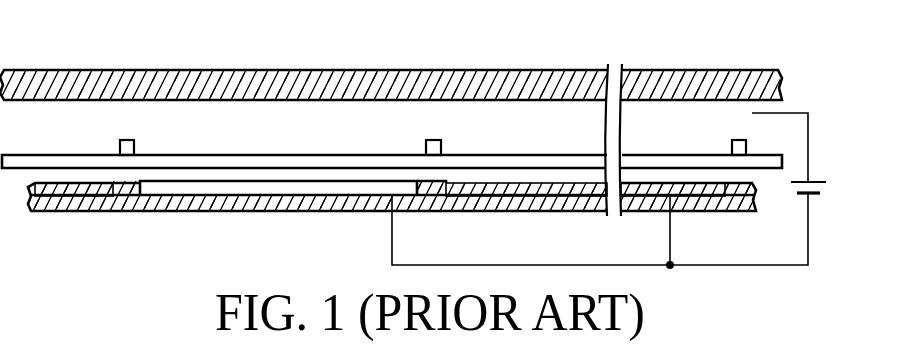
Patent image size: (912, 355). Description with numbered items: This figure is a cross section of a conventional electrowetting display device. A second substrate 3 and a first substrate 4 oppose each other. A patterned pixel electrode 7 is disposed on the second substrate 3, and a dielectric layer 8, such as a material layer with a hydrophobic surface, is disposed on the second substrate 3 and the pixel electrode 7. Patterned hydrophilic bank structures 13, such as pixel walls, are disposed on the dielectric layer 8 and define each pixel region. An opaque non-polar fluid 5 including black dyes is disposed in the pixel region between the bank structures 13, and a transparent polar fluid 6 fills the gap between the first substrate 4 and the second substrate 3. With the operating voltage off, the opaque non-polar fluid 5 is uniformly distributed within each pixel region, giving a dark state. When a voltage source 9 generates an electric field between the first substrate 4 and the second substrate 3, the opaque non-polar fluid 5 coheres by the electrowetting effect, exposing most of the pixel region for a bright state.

The second substrate 3 is at (197, 211).
The first substrate 4 is at (223, 86).
The opaque non-polar fluid 5 is at (57, 154).
The transparent polar fluid 6 is at (335, 112).
The pixel electrode 7 is at (252, 196).
The dielectric layer 8 is at (306, 183).
The voltage source 9 is at (816, 196).
The hydrophilic bank structures 13 is at (126, 140).